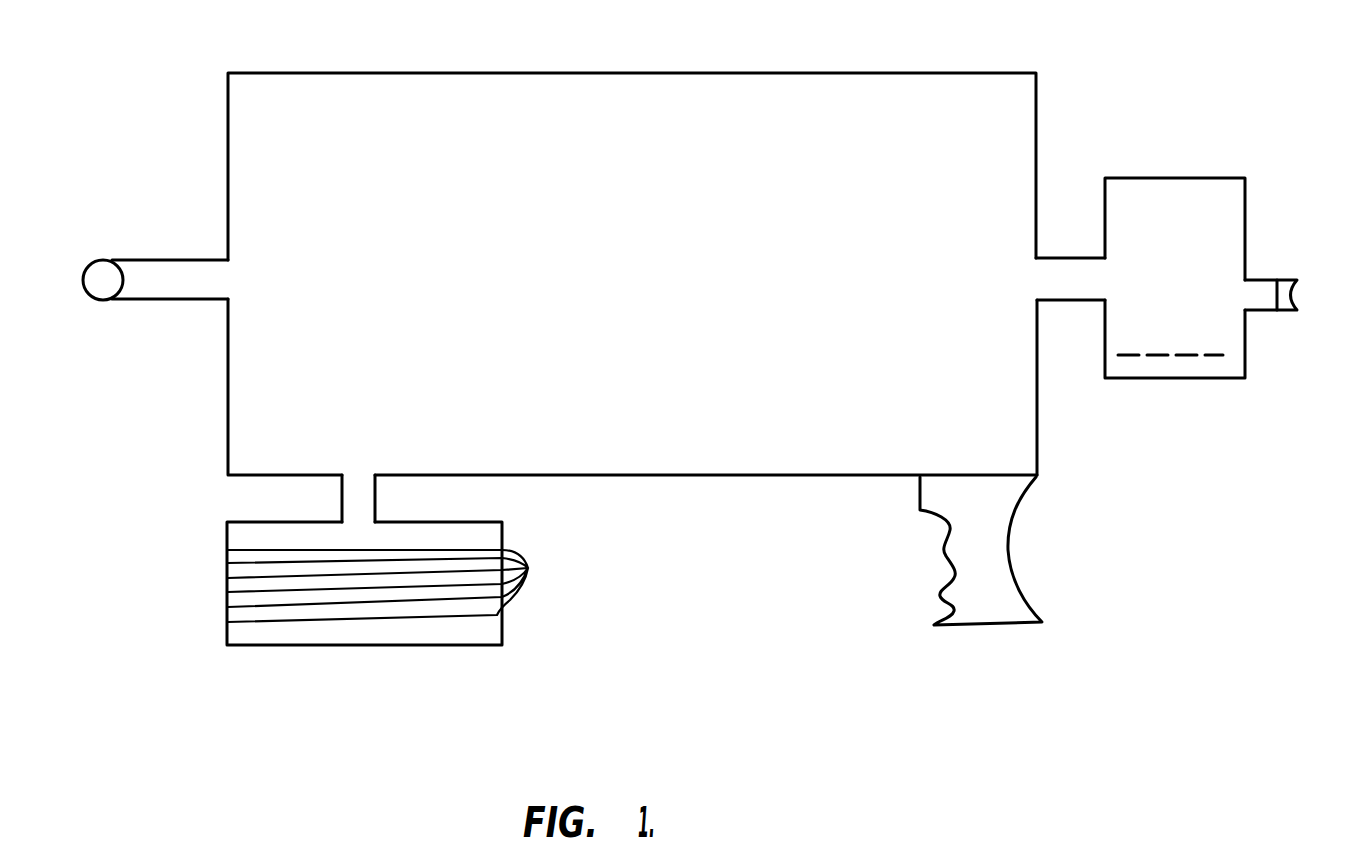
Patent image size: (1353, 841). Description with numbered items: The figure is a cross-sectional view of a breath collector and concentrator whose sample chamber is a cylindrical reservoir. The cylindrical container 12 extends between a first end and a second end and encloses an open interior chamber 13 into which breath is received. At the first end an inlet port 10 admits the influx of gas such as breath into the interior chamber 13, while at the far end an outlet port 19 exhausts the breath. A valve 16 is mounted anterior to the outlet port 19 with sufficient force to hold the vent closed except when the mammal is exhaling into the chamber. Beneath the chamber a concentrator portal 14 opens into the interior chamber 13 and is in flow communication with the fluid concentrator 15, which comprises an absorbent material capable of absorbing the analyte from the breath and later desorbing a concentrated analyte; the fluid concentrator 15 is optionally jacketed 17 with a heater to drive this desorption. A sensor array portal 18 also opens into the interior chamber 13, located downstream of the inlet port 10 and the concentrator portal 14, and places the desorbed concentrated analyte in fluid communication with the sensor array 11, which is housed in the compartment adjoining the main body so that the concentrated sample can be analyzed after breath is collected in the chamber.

The inlet port 10 is at (145, 277).
The sensor array 11 is at (1190, 357).
The cylindrical container 12 is at (672, 73).
The interior chamber 13 is at (690, 450).
The concentrator portal 14 is at (352, 477).
The fluid concentrator 15 is at (405, 635).
The valve 16 is at (1277, 312).
The jacket 17 is at (392, 586).
The sensor array portal 18 is at (1072, 283).
The outlet port 19 is at (1290, 288).